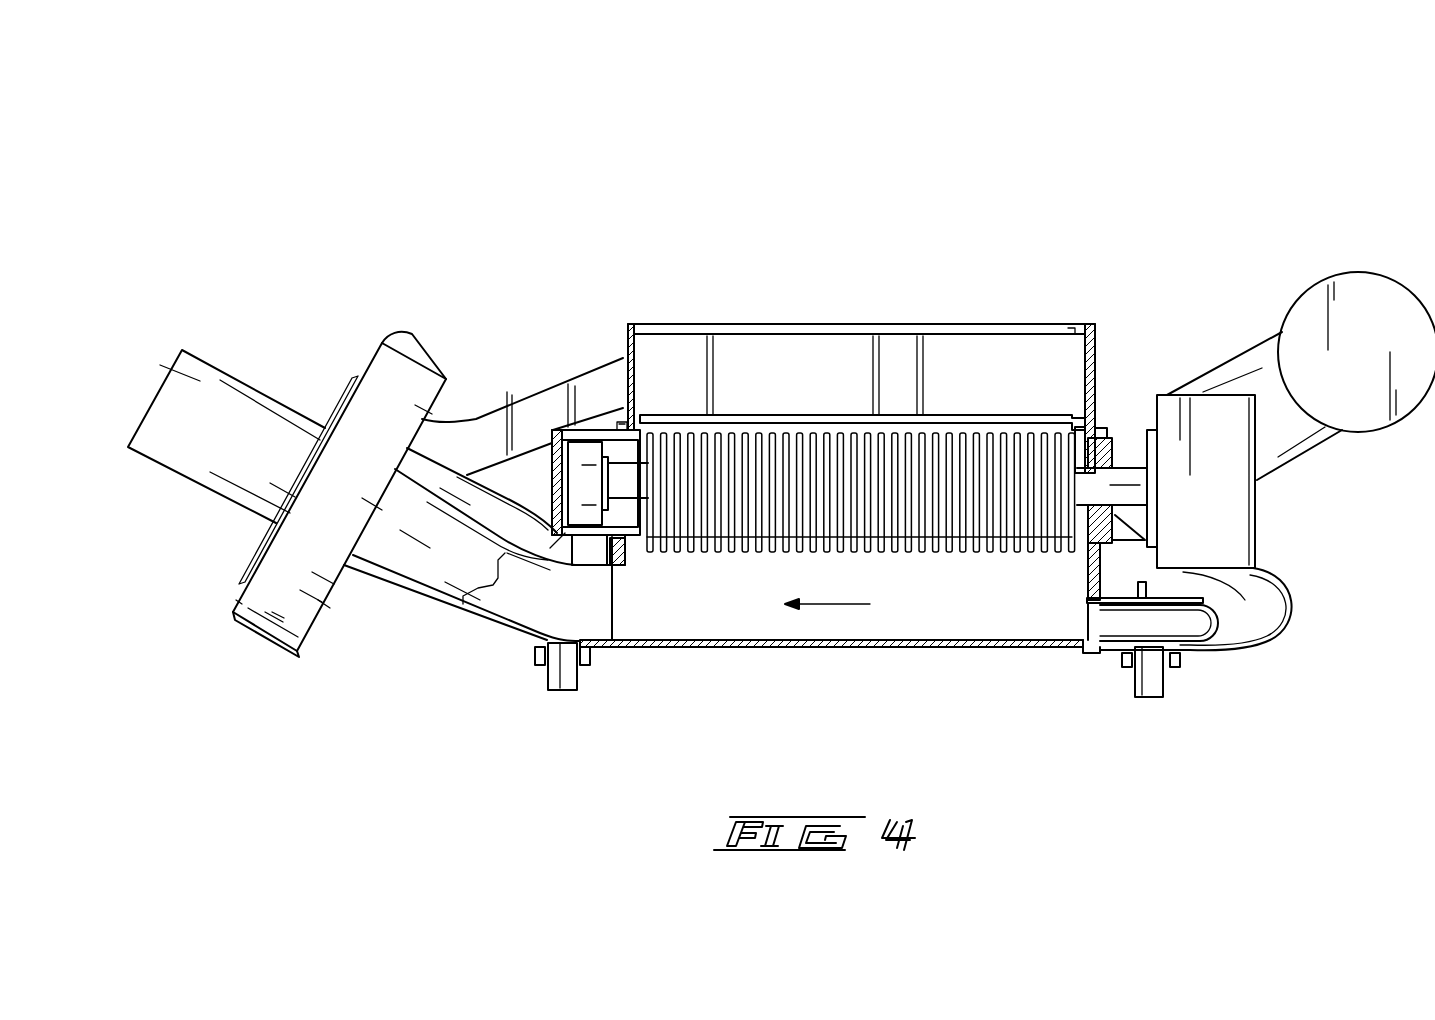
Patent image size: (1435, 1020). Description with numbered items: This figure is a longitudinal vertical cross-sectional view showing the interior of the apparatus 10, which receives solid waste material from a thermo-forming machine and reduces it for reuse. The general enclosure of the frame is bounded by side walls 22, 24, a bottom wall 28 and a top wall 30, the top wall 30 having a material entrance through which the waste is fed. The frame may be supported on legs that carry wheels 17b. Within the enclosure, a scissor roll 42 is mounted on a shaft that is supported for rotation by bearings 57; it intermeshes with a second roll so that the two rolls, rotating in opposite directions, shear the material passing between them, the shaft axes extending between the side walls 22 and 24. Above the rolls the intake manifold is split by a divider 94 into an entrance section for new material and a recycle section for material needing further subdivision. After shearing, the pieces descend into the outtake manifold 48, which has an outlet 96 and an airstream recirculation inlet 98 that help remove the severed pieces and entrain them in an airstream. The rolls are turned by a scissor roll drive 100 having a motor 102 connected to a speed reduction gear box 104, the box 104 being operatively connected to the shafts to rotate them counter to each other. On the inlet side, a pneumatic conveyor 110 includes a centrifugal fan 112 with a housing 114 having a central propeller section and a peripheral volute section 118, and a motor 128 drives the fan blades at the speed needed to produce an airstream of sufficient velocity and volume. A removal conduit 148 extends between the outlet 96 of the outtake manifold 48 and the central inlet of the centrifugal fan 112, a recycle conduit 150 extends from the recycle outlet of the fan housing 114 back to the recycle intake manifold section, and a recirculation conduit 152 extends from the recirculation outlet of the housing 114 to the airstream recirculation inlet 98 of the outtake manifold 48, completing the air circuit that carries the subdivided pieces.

The apparatus 10 is at (765, 250).
The top wall 30 is at (928, 326).
The divider 94 is at (803, 368).
The scissor roll 42 is at (958, 432).
The side wall 22 is at (625, 558).
The bearings 57 is at (590, 498).
The speed reduction gear box 104 is at (1235, 517).
The scissor roll drive 100 is at (1312, 290).
The motor 102 is at (1396, 327).
The side wall 24 is at (1085, 577).
The recirculation conduit 152 is at (1270, 612).
The outtake manifold 48 is at (940, 620).
The bottom wall 28 is at (808, 652).
The airstream recirculation inlet 98 is at (1090, 640).
The outlet 96 is at (612, 600).
The wheels 17b is at (560, 702).
The recycle conduit 150 is at (532, 427).
The removal conduit 148 is at (452, 563).
The pneumatic conveyor 110 is at (347, 330).
The centrifugal fan 112 is at (236, 600).
The peripheral volute section 118 is at (278, 610).
The housing 114 is at (325, 605).
The motor 128 is at (228, 439).